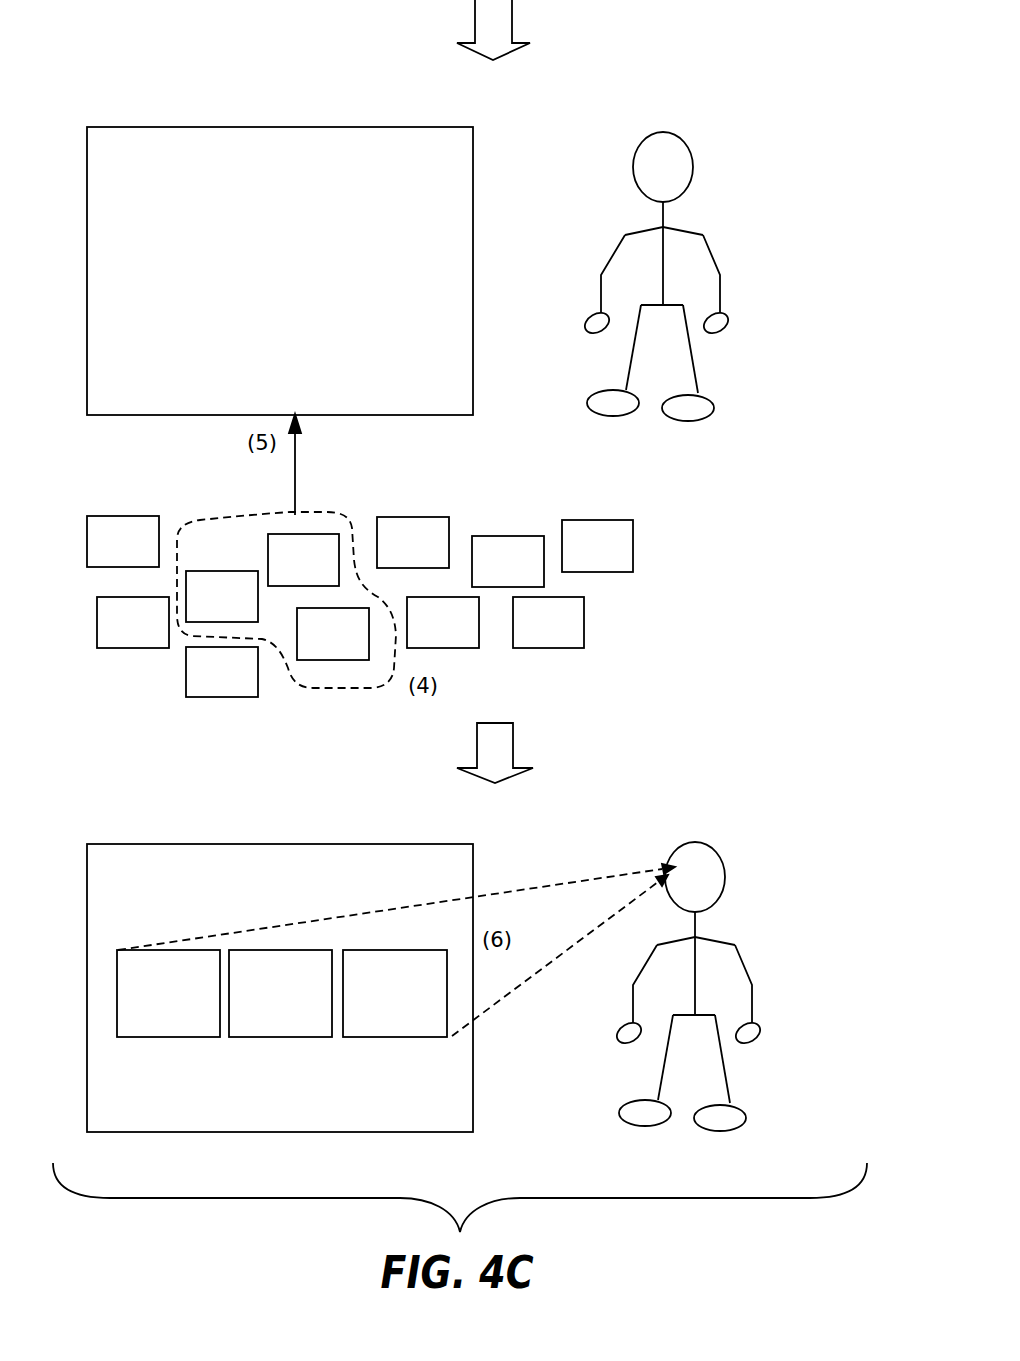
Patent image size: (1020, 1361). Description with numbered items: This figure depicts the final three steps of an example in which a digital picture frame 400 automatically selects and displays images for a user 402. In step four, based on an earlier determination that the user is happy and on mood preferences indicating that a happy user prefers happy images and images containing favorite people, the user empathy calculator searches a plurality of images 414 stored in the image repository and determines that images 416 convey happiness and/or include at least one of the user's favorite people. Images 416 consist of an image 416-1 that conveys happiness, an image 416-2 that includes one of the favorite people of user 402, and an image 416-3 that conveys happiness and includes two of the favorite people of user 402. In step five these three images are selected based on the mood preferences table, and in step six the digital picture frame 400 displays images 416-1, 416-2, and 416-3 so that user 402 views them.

The digital picture frame 400 is at (390, 127).
The user 402 is at (717, 127).
The plurality of images 414 is at (642, 497).
The images 416 is at (327, 515).
The image 416-1 is at (196, 607).
The image 416-2 is at (278, 572).
The image 416-3 is at (307, 647).